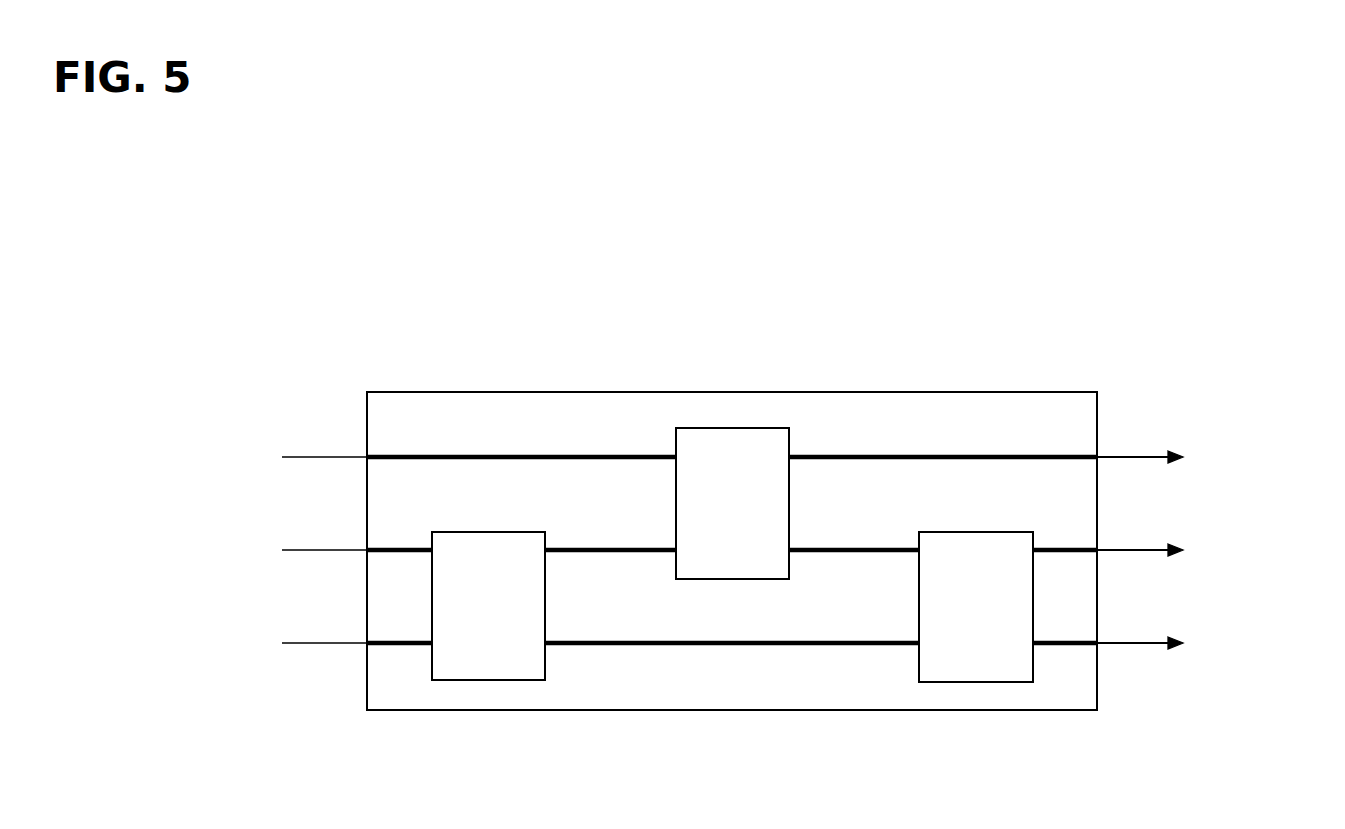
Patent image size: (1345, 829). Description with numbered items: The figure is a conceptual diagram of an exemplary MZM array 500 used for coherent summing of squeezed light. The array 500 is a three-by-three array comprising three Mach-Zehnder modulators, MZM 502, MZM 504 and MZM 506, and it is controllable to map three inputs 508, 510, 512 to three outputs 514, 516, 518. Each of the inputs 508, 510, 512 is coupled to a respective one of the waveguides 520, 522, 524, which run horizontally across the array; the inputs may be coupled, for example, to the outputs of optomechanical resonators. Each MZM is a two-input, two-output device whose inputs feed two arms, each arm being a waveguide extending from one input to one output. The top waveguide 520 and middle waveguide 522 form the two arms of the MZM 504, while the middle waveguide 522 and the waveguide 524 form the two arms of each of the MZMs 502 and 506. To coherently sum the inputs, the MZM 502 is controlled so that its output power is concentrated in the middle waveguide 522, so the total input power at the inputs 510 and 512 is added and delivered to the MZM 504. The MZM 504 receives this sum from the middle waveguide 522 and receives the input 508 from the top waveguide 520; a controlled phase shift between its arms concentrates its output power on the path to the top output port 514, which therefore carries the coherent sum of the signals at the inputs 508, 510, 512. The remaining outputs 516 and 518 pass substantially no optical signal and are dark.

The MZM array 500 is at (1241, 163).
The MZM 502 is at (488, 606).
The MZM 504 is at (732, 503).
The MZM 506 is at (976, 607).
The input 508 is at (330, 457).
The input 510 is at (330, 550).
The input 512 is at (330, 643).
The top output port 514 is at (1145, 457).
The output 516 is at (1145, 550).
The output 518 is at (1145, 643).
The top waveguide 520 is at (480, 457).
The middle waveguide 522 is at (408, 549).
The waveguide 524 is at (695, 643).